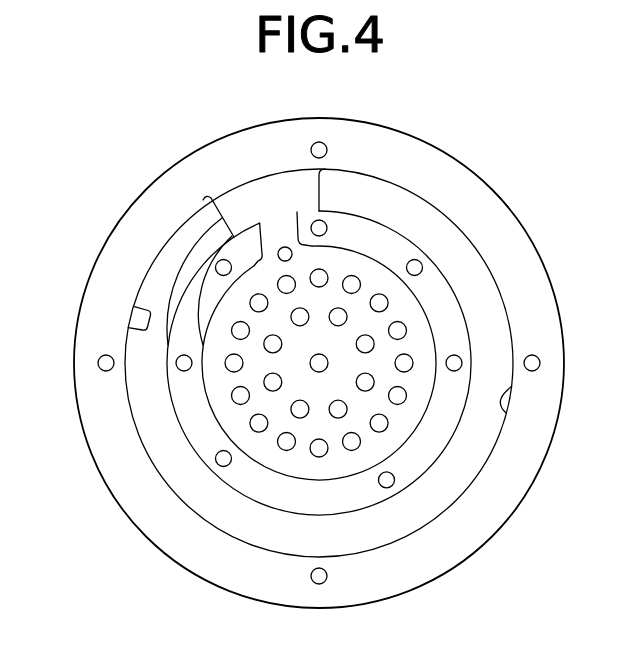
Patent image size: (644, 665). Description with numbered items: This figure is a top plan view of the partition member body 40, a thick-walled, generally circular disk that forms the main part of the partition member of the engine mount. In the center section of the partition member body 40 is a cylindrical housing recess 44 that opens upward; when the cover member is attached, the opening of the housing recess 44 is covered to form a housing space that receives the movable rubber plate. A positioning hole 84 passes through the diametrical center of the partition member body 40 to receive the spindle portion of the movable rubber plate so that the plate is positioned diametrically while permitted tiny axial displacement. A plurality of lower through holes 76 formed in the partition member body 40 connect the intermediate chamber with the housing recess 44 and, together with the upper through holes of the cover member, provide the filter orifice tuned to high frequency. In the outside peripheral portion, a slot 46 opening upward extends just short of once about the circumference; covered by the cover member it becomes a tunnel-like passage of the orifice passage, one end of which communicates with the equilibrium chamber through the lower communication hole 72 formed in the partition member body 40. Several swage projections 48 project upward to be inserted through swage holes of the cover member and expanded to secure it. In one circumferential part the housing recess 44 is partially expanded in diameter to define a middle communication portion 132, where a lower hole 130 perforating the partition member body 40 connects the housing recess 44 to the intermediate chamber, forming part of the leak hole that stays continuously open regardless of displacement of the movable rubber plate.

The partition member body 40 is at (522, 181).
The housing recess 44 is at (381, 226).
The slot 46 is at (506, 403).
The swage projection 48 is at (320, 141).
The lower communication hole 72 is at (138, 317).
The lower through holes 76 is at (294, 311).
The positioning hole 84 is at (318, 372).
The lower hole 130 is at (295, 210).
The middle communication portion 132 is at (268, 224).